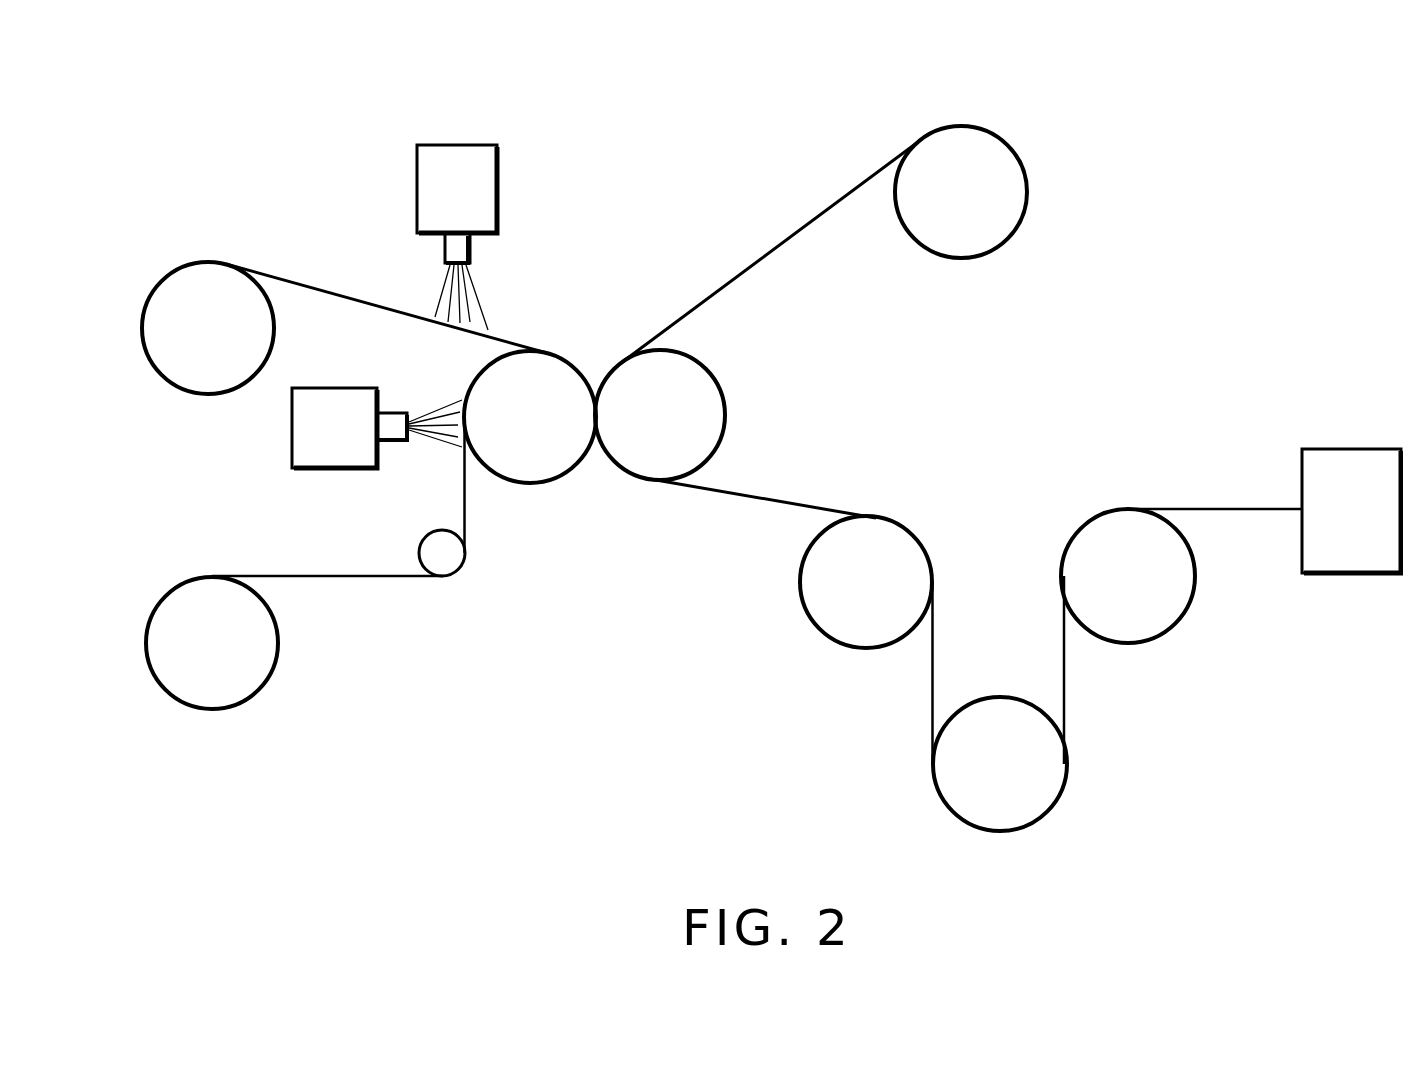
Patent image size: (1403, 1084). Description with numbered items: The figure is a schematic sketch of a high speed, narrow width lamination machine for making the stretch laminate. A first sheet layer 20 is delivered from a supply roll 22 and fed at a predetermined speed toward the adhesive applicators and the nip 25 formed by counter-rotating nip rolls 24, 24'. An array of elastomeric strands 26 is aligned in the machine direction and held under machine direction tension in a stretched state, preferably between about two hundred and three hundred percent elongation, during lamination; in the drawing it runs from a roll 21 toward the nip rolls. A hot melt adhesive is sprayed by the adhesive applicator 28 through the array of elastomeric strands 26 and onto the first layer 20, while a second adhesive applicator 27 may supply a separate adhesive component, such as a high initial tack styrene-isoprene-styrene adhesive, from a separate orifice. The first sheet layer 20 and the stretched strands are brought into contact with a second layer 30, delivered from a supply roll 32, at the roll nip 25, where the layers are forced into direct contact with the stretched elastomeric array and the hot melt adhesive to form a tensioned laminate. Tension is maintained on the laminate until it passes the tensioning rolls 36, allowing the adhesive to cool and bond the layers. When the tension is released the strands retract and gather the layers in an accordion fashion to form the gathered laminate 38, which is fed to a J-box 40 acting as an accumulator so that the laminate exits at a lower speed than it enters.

The first sheet layer 20 is at (358, 573).
The supply roll of first web 21 is at (153, 285).
The supply roll 22 is at (172, 700).
The nip roll 24 is at (538, 389).
The nip roll 24' is at (693, 415).
The nip 25 is at (595, 458).
The array of elastomeric strands 26 is at (278, 273).
The adhesive applicator 27 is at (348, 388).
The adhesive applicator 28 is at (462, 145).
The second layer 30 is at (813, 212).
The supply roll 32 is at (1010, 238).
The tensioning rolls 36 is at (878, 766).
The gathered laminate 38 is at (1247, 507).
The J-box 40 is at (1338, 447).